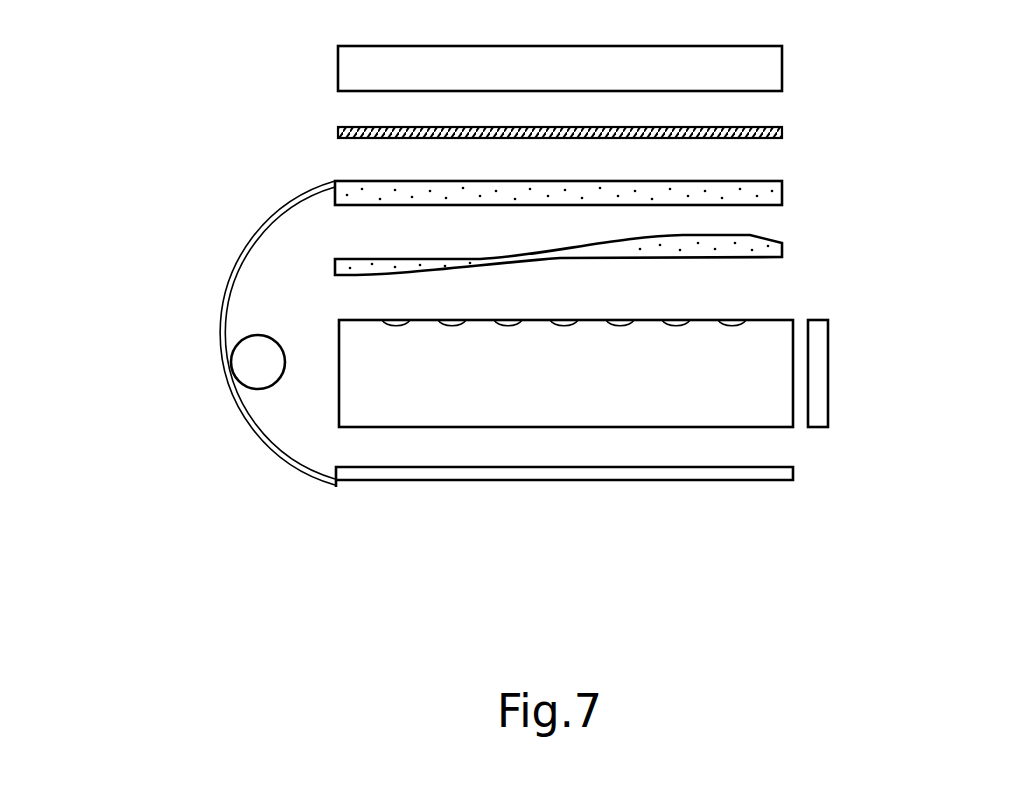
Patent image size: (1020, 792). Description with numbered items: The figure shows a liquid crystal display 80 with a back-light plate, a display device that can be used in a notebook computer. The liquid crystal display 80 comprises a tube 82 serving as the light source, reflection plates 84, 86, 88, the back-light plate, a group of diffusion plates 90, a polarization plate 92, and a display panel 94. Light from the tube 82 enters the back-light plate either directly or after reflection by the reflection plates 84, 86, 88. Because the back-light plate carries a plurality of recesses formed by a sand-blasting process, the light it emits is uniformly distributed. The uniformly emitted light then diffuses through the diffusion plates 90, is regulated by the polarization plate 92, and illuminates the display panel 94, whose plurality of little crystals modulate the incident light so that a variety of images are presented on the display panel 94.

The liquid crystal display 80 is at (147, 75).
The tube 82 is at (231, 377).
The reflection plate 84 is at (238, 477).
The reflection plate 86 is at (712, 480).
The reflection plate 88 is at (828, 372).
The diffusion plates 90 is at (793, 189).
The polarization plate 92 is at (782, 128).
The display panel 94 is at (782, 65).